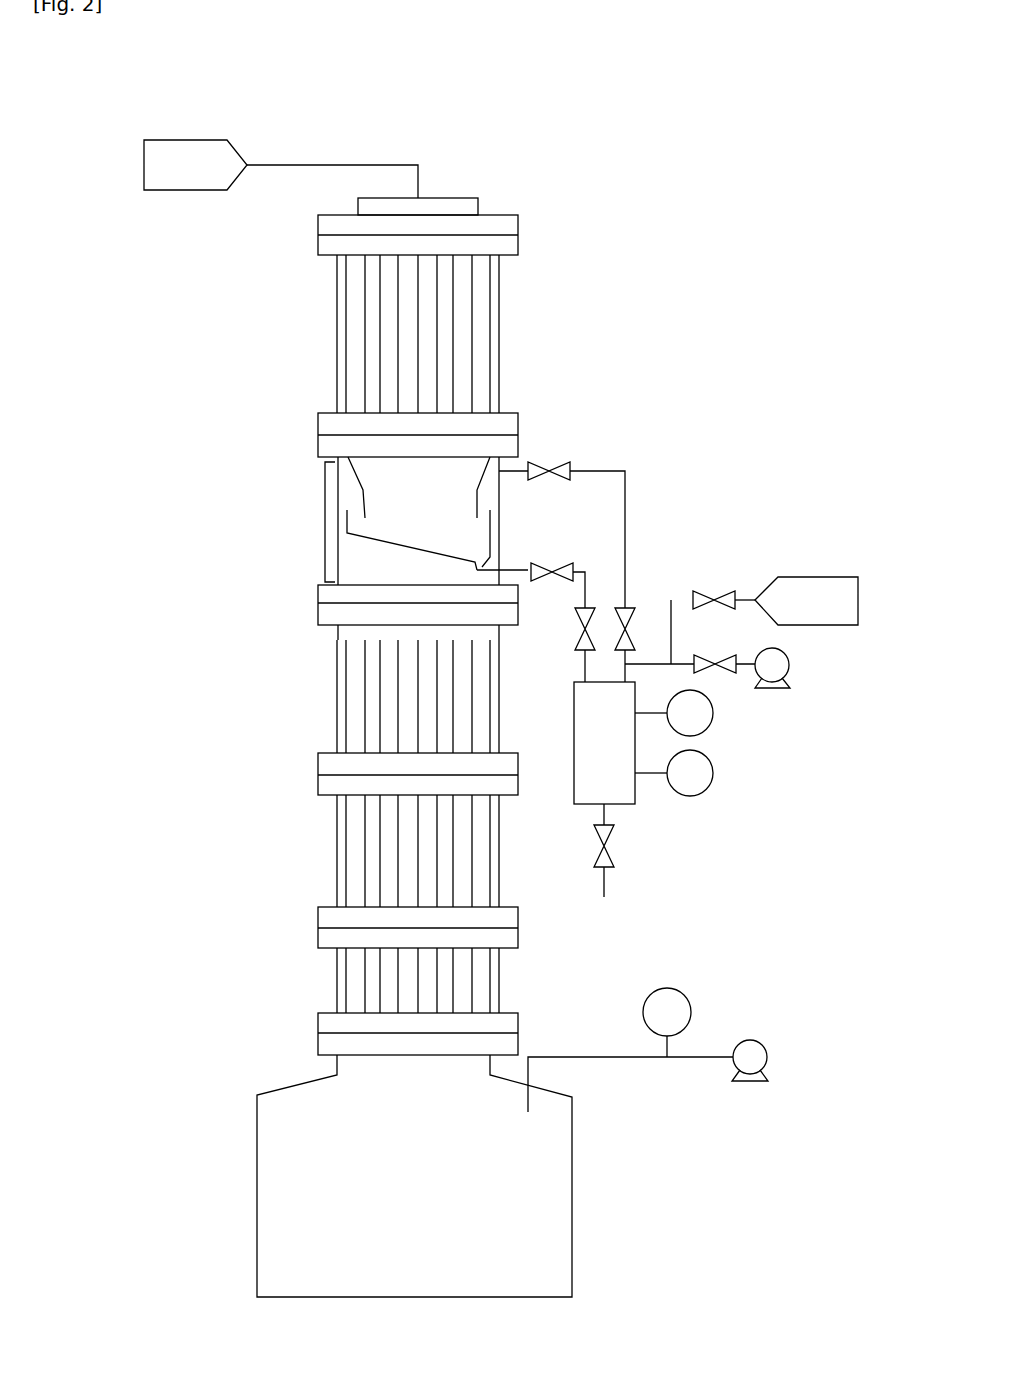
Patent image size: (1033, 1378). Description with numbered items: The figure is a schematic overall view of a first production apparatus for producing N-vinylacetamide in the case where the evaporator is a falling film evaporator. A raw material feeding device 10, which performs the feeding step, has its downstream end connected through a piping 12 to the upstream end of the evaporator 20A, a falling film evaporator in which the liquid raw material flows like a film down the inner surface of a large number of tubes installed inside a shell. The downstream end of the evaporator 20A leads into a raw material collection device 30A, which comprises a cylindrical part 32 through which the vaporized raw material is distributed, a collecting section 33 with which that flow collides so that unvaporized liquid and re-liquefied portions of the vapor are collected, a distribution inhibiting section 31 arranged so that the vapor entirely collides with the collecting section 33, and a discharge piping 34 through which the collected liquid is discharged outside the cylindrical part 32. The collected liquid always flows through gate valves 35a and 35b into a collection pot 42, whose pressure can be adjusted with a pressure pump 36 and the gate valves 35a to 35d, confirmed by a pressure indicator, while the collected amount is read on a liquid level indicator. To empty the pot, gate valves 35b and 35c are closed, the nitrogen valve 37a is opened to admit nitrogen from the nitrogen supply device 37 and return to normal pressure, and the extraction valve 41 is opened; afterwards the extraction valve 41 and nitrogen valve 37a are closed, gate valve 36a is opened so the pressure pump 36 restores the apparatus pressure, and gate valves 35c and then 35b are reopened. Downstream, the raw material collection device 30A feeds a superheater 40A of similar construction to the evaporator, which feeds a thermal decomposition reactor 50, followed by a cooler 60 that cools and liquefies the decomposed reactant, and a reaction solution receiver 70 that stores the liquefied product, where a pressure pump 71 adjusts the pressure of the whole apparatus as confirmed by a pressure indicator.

The raw material feeding device 10 is at (183, 140).
The piping 12 is at (325, 165).
The evaporator 20A is at (337, 330).
The raw material collection device 30A is at (392, 521).
The distribution inhibiting section 31 is at (360, 478).
The cylindrical part 32 is at (338, 563).
The collecting section 33 is at (388, 543).
The discharge piping 34 is at (485, 578).
The gate valve 35a is at (552, 568).
The gate valve 35b is at (582, 645).
The gate valve 35c is at (630, 620).
The gate valve 35d is at (549, 471).
The pressure pump 36 is at (790, 665).
The gate valve 36a is at (722, 675).
The nitrogen supply device 37 is at (818, 577).
The nitrogen valve 37a is at (712, 597).
The superheater 40A is at (337, 700).
The extraction valve 41 is at (605, 845).
The collection pot 42 is at (574, 765).
The thermal decomposition reactor 50 is at (337, 848).
The cooler 60 is at (337, 975).
The reaction solution receiver 70 is at (257, 1170).
The pressure pump 71 is at (767, 1057).